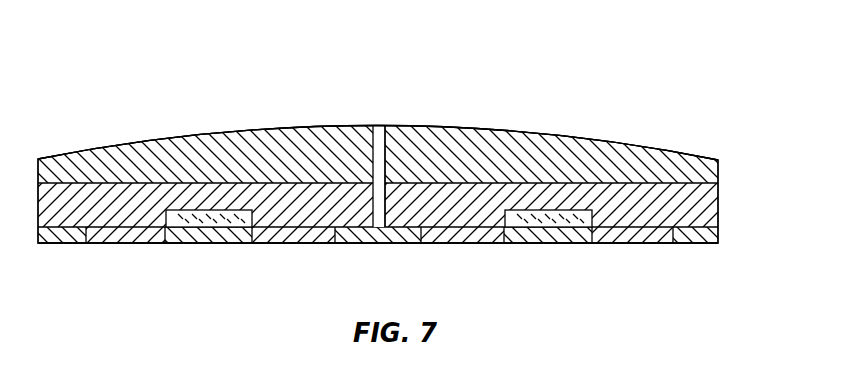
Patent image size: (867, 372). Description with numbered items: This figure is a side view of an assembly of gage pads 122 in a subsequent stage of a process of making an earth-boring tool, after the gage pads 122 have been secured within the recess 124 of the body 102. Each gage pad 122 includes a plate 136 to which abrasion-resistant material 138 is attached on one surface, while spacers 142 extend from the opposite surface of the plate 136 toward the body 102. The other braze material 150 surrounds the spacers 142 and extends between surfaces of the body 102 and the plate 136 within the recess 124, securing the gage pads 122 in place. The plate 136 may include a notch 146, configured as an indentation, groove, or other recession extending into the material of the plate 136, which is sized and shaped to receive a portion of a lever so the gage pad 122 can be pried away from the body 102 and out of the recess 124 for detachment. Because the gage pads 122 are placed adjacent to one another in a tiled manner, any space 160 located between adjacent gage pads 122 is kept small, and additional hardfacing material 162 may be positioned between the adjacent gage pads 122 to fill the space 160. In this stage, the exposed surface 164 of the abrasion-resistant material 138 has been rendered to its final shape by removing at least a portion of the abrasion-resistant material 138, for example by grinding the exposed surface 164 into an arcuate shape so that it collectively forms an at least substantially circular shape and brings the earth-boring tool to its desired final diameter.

The body 102 is at (595, 295).
The gage pad 122 is at (197, 44).
The recess 124 is at (718, 198).
The plate 136 is at (116, 198).
The abrasion-resistant material 138 is at (69, 151).
The spacers 142 is at (141, 238).
The notch 146 is at (221, 213).
The braze material 150 is at (373, 243).
The space 160 is at (378, 131).
The hardfacing material 162 is at (384, 163).
The exposed surface 164 is at (302, 128).